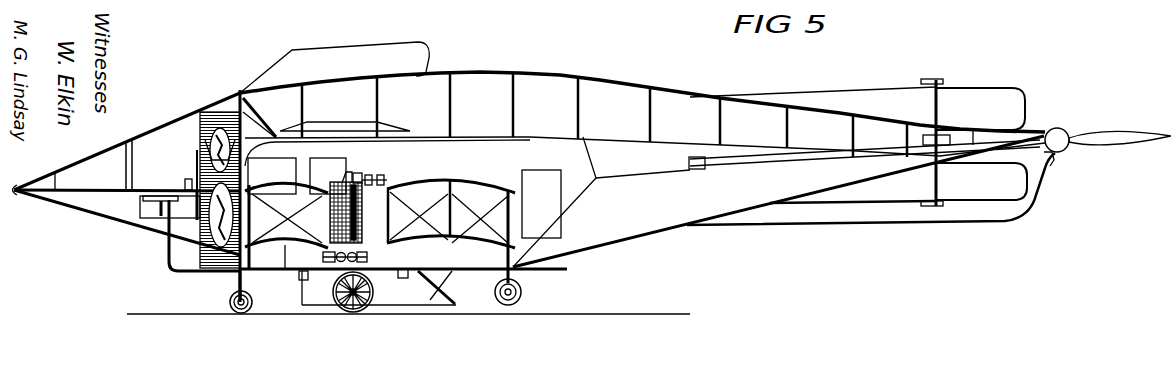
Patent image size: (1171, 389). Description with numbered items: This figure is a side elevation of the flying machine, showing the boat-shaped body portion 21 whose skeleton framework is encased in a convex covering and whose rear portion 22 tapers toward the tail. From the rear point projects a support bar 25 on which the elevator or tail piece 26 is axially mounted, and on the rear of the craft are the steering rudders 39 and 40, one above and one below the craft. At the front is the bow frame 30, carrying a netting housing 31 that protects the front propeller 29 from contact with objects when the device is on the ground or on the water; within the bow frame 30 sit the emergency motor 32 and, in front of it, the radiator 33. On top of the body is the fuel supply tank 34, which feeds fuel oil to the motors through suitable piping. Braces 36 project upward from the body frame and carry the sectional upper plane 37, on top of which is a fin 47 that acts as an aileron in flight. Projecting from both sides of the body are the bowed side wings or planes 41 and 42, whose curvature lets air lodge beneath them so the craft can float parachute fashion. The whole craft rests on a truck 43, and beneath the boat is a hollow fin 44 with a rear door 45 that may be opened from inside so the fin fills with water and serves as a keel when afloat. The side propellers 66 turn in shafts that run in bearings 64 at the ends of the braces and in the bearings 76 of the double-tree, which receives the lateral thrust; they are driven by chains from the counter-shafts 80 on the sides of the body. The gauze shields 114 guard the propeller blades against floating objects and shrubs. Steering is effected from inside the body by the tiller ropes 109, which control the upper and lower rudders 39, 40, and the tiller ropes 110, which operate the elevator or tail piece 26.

The body portion 21 is at (474, 170).
The tapering rear portion 22 is at (778, 201).
The support bar 25 is at (1052, 166).
The elevator or tail piece 26 is at (1112, 142).
The front propeller 29 is at (220, 116).
The bow frame 30 is at (127, 141).
The housing 31 is at (202, 153).
The motor 32 is at (147, 218).
The radiator 33 is at (125, 173).
The fuel supply tank 34 is at (347, 130).
The braces 36 is at (450, 113).
The upper plane 37 is at (560, 74).
The upper steering rudder 39 is at (980, 109).
The lower steering rudder 40 is at (981, 181).
The side wing or plane 41 is at (316, 199).
The side wing or plane 42 is at (427, 236).
The truck 43 is at (353, 313).
The hollow fin 44 is at (315, 300).
The door 45 is at (452, 293).
The fin 47 is at (334, 67).
The bearings 64 is at (385, 178).
The side propellers 66 is at (348, 174).
The bearings 76 is at (385, 174).
The counter-shafts 80 is at (370, 258).
The tiller ropes 109 is at (757, 144).
The tiller ropes 110 is at (1046, 128).
The gauze shields 114 is at (322, 247).